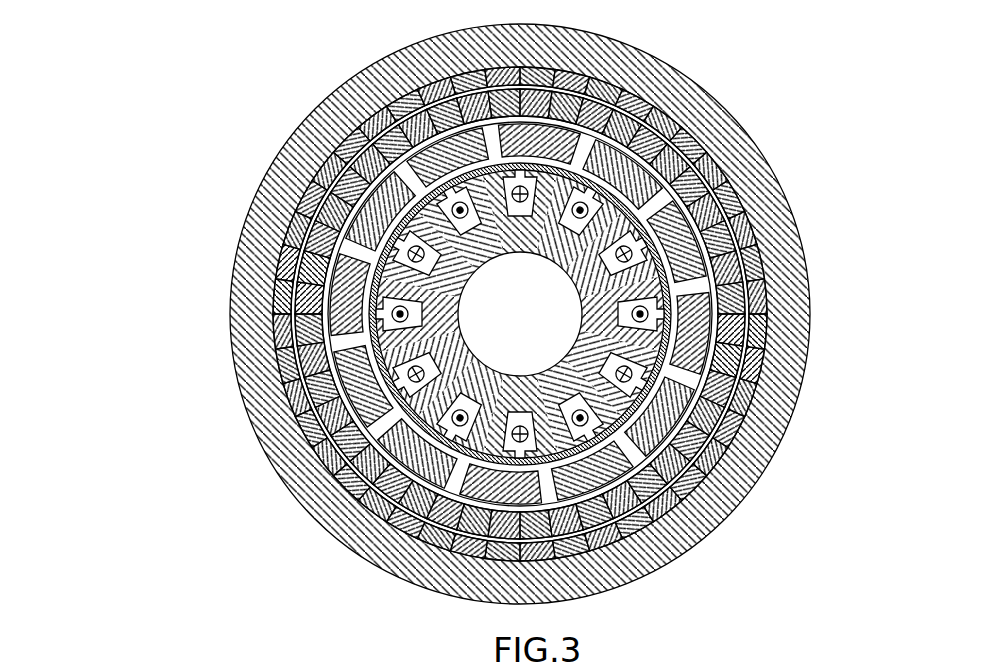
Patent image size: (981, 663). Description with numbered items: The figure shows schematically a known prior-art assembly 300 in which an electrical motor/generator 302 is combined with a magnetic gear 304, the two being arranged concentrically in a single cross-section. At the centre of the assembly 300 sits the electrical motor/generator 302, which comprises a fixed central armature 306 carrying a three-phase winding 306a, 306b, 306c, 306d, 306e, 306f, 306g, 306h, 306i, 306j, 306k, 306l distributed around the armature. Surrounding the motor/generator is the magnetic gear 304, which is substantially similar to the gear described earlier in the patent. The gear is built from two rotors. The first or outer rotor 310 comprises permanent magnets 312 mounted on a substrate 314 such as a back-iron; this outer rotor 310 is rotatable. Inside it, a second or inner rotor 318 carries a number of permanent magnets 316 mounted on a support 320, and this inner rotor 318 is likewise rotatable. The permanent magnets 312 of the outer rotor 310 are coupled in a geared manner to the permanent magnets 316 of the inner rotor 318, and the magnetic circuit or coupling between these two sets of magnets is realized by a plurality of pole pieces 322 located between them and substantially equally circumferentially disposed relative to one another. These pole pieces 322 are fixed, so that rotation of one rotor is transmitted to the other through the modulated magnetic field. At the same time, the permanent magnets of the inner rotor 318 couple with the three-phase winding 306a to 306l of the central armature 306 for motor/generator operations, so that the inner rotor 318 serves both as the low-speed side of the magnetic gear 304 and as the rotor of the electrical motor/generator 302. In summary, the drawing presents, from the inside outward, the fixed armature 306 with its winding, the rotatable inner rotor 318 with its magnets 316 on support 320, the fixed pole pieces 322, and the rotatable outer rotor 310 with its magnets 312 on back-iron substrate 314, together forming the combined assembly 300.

The assembly 300 is at (232, 128).
The electrical motor/generator 302 is at (528, 317).
The magnetic gear 304 is at (515, 594).
The central armature 306 is at (520, 314).
The 3-phase winding 306a is at (459, 215).
The 3-phase winding 306b is at (422, 258).
The 3-phase winding 306c is at (412, 318).
The 3-phase winding 306d is at (431, 374).
The 3-phase winding 306e is at (471, 415).
The 3-phase winding 306f is at (525, 428).
The 3-phase winding 306g is at (580, 414).
The 3-phase winding 306h is at (616, 372).
The 3-phase winding 306i is at (629, 309).
The 3-phase winding 306j is at (613, 253).
The 3-phase winding 306k is at (568, 212).
The 3-phase winding 306l is at (514, 202).
The outer rotor 310 is at (123, 290).
The permanent magnets 312 is at (348, 295).
The substrate 314 is at (227, 347).
The permanent magnets 316 is at (700, 262).
The inner rotor 318 is at (873, 258).
The support 320 is at (673, 315).
The pole pieces 322 is at (295, 242).